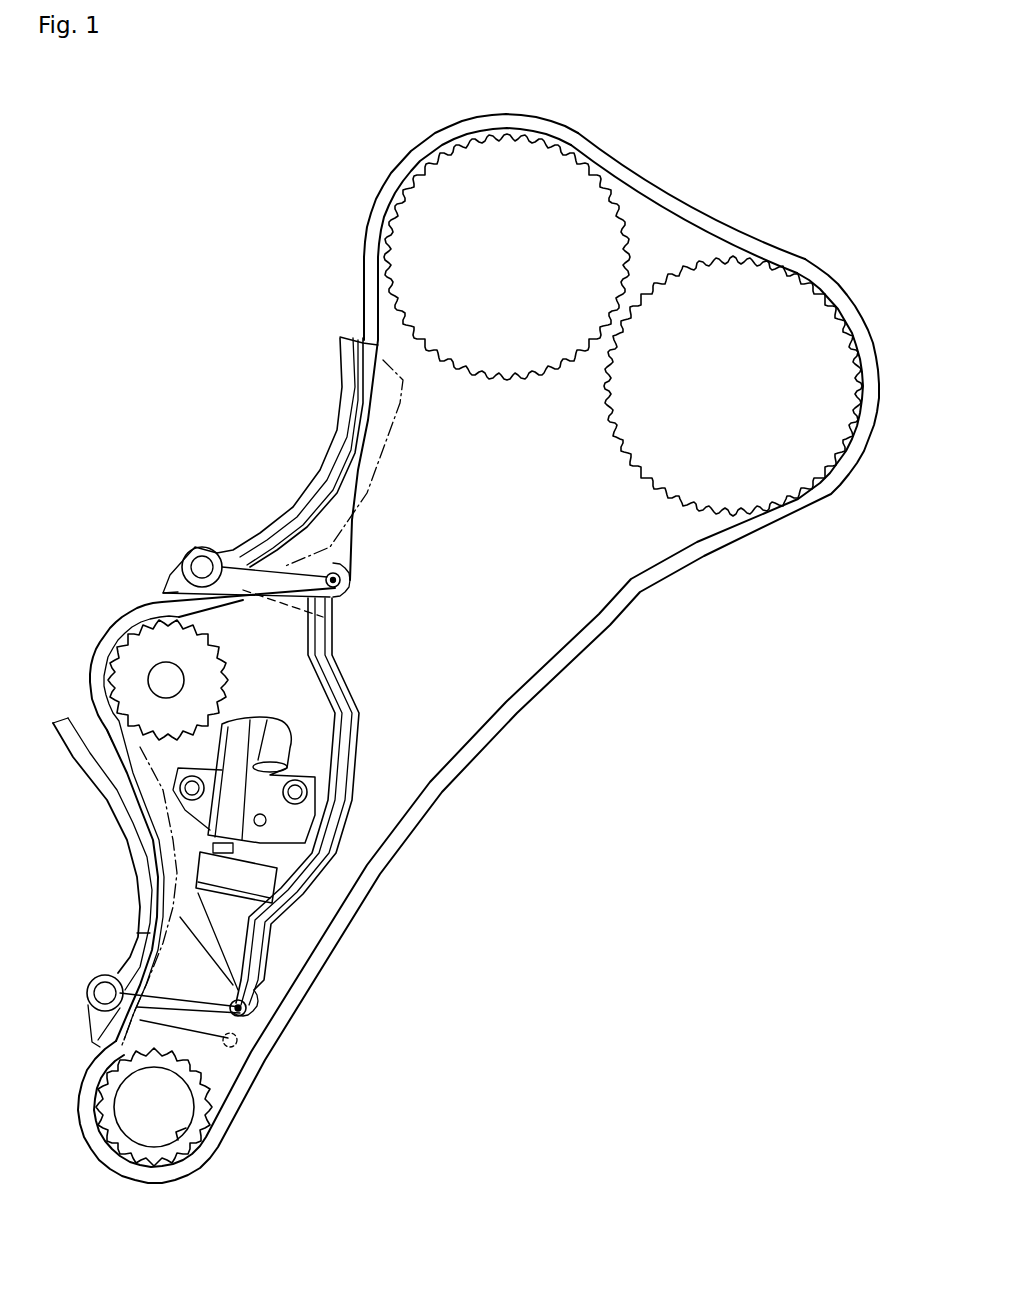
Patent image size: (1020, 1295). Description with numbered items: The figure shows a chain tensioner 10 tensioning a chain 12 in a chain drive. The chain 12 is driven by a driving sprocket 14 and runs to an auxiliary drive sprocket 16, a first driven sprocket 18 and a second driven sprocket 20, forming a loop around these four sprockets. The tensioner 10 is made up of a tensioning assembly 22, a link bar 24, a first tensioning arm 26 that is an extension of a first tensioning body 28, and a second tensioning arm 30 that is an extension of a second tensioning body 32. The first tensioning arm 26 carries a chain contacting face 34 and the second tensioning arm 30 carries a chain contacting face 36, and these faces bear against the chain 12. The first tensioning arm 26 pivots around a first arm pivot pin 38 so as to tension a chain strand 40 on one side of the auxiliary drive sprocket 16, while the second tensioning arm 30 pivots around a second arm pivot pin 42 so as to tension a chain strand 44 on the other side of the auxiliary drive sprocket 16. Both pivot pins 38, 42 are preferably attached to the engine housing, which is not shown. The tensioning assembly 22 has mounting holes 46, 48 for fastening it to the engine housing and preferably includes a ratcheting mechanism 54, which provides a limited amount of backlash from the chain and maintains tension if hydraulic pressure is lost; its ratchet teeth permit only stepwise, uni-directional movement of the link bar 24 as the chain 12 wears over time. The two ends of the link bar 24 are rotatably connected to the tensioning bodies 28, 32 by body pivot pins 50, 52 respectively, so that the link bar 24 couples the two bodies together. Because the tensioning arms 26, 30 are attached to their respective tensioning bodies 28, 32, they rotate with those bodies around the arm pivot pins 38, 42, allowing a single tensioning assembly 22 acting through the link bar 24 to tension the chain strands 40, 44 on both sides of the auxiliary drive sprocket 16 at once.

The chain tensioner 10 is at (403, 635).
The chain 12 is at (614, 631).
The driving sprocket 14 is at (142, 1122).
The auxiliary drive sprocket 16 is at (138, 663).
The first driven sprocket 18 is at (494, 267).
The second driven sprocket 20 is at (727, 397).
The tensioning assembly 22 is at (345, 816).
The link bar 24 is at (340, 770).
The first tensioning arm 26 is at (91, 882).
The first tensioning body 28 is at (188, 968).
The second tensioning arm 30 is at (313, 467).
The second tensioning body 32 is at (335, 550).
The chain contacting face 34 is at (133, 820).
The chain contacting face 36 is at (333, 480).
The first arm pivot pin 38 is at (103, 987).
The chain strand 40 is at (130, 775).
The second arm pivot pin 42 is at (203, 567).
The chain strand 44 is at (372, 388).
The mounting hole 46 is at (267, 850).
The mounting hole 48 is at (193, 788).
The body pivot pin 50 is at (247, 1013).
The body pivot pin 52 is at (337, 580).
The ratcheting mechanism 54 is at (260, 822).